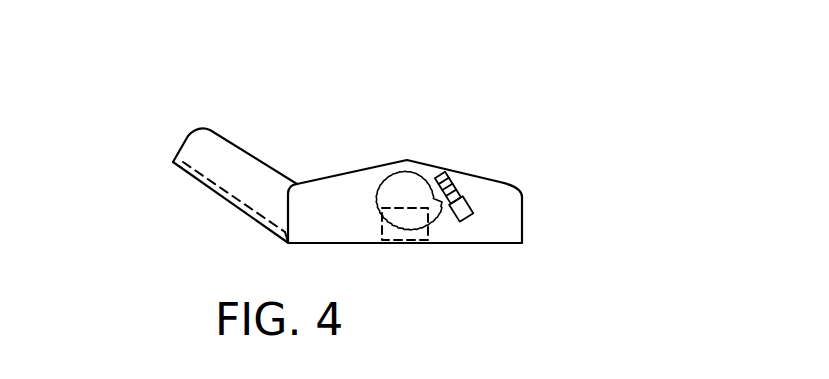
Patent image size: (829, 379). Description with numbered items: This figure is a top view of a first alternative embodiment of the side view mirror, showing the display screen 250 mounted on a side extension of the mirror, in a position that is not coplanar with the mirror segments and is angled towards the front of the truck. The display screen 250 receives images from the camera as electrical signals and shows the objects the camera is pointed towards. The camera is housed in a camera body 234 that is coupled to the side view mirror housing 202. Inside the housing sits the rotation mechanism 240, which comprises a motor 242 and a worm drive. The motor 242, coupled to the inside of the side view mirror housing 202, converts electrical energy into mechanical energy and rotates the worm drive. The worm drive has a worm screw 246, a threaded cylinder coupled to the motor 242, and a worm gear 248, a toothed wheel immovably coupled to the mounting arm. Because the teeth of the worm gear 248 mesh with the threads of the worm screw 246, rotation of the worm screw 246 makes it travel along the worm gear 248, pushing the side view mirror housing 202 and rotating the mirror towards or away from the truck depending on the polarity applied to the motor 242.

The side view mirror housing 202 is at (212, 130).
The display screen 250 is at (228, 204).
The worm gear 248 is at (372, 181).
The camera body 234 is at (407, 210).
The worm screw 246 is at (453, 182).
The motor 242 is at (463, 223).
The rotation mechanism 240 is at (548, 158).